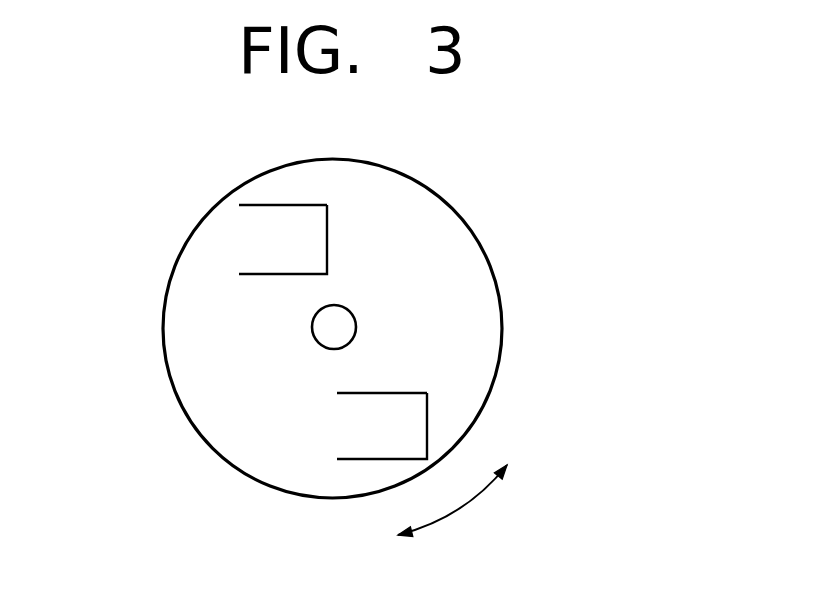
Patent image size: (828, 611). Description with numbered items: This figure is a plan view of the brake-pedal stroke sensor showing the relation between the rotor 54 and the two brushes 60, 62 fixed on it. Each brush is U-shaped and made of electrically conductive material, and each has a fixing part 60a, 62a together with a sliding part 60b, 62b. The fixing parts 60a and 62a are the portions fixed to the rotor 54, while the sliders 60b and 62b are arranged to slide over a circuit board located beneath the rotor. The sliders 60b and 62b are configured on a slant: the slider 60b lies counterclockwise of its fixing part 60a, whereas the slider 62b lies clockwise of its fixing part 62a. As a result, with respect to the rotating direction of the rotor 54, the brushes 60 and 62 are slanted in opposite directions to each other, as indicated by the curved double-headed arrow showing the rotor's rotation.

The rotor 54 is at (503, 328).
The brush 60 is at (448, 200).
The fixing part 60a is at (327, 238).
The sliding part 60b is at (290, 204).
The brush 62 is at (496, 417).
The fixing part 62a is at (427, 427).
The sliding part 62b is at (390, 392).